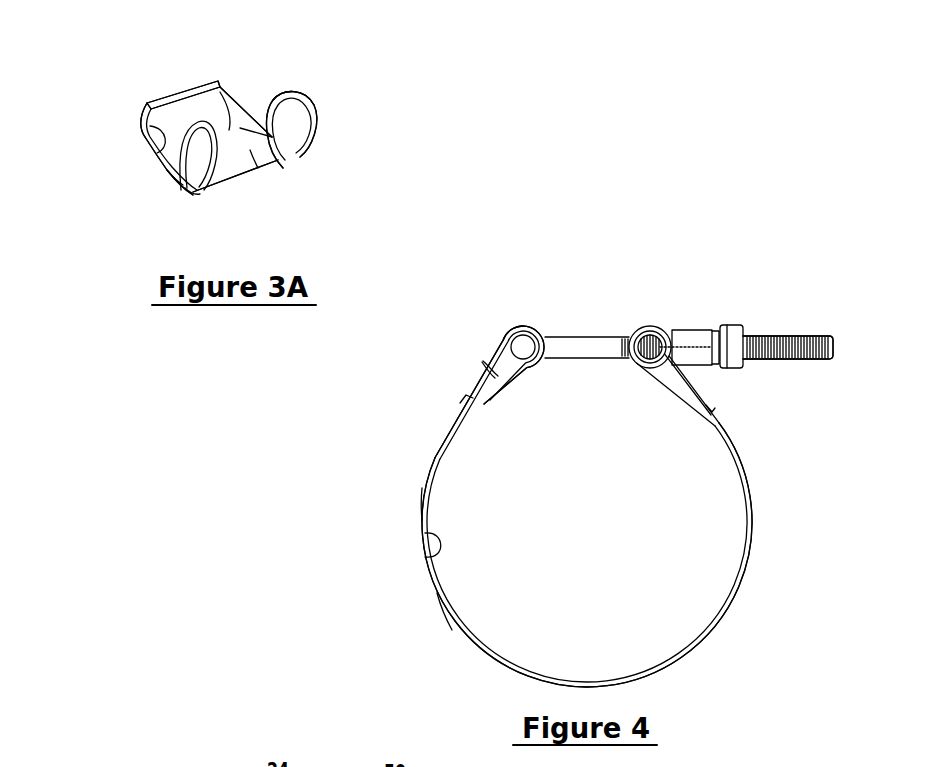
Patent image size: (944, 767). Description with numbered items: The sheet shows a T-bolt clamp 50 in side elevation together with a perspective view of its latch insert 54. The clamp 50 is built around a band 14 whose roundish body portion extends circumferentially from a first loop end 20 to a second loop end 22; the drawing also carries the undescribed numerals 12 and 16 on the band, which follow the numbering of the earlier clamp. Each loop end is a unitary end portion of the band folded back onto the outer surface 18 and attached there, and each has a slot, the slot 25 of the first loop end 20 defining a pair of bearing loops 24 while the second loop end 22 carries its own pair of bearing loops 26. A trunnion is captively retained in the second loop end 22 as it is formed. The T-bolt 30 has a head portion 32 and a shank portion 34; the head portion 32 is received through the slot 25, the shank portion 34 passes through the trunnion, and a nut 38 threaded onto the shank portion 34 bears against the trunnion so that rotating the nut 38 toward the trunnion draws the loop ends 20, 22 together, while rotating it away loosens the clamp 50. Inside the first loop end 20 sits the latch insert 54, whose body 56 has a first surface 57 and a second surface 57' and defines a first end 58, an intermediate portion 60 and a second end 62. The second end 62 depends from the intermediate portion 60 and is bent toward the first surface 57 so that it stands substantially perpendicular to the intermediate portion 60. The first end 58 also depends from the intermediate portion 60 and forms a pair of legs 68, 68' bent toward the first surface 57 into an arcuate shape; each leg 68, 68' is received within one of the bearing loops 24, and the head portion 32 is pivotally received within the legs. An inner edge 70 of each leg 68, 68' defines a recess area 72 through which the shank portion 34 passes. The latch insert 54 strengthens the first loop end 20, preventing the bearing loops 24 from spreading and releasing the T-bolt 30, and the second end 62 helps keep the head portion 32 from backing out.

In FIG. 4, the clamp band 12 is at (611, 372).
In FIG. 4, the band 14 is at (437, 593).
In FIG. 4, the band hook tab 16 is at (432, 552).
In FIG. 4, the outer surface 18 is at (422, 488).
In FIG. 4, the first loop end 20 is at (470, 392).
In FIG. 4, the second loop end 22 is at (695, 366).
In FIG. 4, the bearing loops 24 is at (500, 337).
In FIG. 4, the slot 25 is at (492, 337).
In FIG. 4, the bearing loops 26 is at (657, 326).
In FIG. 4, the T-bolt 30 is at (600, 337).
In FIG. 4, the head portion 32 is at (523, 345).
In FIG. 4, the shank portion 34 is at (799, 336).
In FIG. 4, the nut 38 is at (731, 325).
In FIG. 4, the T-bolt clamp 50 is at (735, 261).
In FIG. 3A, the latch insert 54 is at (285, 63).
In FIG. 4, the latch insert 54 is at (466, 358).
In FIG. 3A, the body 56 is at (150, 153).
In FIG. 3A, the first surface 57 is at (115, 133).
In FIG. 3A, the second surface 57' is at (142, 197).
In FIG. 3A, the first end 58 is at (197, 187).
In FIG. 3A, the intermediate portion 60 is at (240, 128).
In FIG. 3A, the second end 62 is at (147, 103).
In FIG. 3A, the leg 68 is at (209, 177).
In FIG. 3A, the leg 68' is at (328, 130).
In FIG. 3A, the inner edge 70 is at (231, 128).
In FIG. 3A, the recess area 72 is at (257, 141).